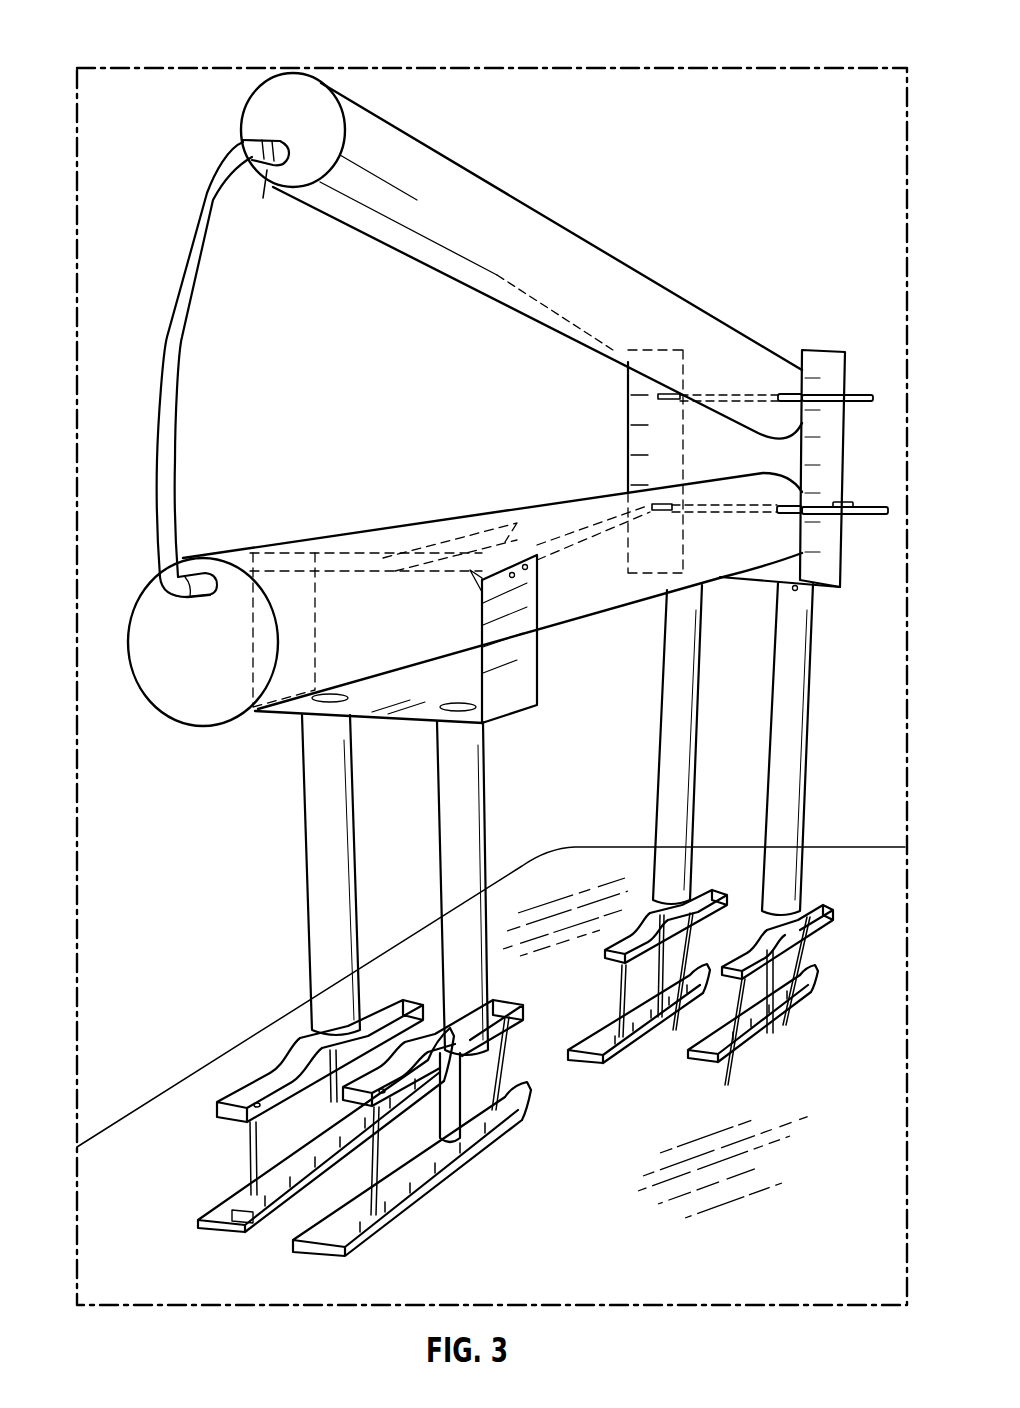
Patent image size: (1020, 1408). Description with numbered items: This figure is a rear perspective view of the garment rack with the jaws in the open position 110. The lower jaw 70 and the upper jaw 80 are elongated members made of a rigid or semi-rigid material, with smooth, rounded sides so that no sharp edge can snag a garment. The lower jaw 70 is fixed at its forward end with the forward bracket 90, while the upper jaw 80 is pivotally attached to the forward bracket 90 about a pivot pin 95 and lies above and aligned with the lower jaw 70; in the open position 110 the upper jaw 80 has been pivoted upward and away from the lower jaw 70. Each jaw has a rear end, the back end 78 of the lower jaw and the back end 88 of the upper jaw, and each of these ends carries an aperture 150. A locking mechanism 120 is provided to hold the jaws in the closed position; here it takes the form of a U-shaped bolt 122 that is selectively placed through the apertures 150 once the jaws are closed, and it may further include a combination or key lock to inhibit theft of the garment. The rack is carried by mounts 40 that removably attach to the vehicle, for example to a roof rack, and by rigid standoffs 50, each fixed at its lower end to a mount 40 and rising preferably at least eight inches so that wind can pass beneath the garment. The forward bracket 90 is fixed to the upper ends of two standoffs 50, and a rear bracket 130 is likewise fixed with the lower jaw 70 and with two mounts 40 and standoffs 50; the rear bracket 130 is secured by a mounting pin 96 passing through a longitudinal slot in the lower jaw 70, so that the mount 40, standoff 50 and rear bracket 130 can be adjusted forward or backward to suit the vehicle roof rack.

The open position 110 is at (112, 28).
The front end of upper jaw / back end of upper jaw 88 is at (258, 119).
The upper jaw 80 is at (612, 268).
The apertures 150 is at (277, 175).
The U-shaped bolt 122 is at (177, 323).
The locking mechanism 120 is at (148, 500).
The pivot pin 95 is at (860, 396).
The forward bracket 90 is at (827, 413).
The mounting pin 96 is at (527, 563).
The lower jaw 70 is at (565, 528).
The back end of lower jaw 78 is at (192, 703).
The rear bracket 130 is at (525, 687).
The standoff 50 is at (790, 778).
The mount 40 is at (233, 1064).